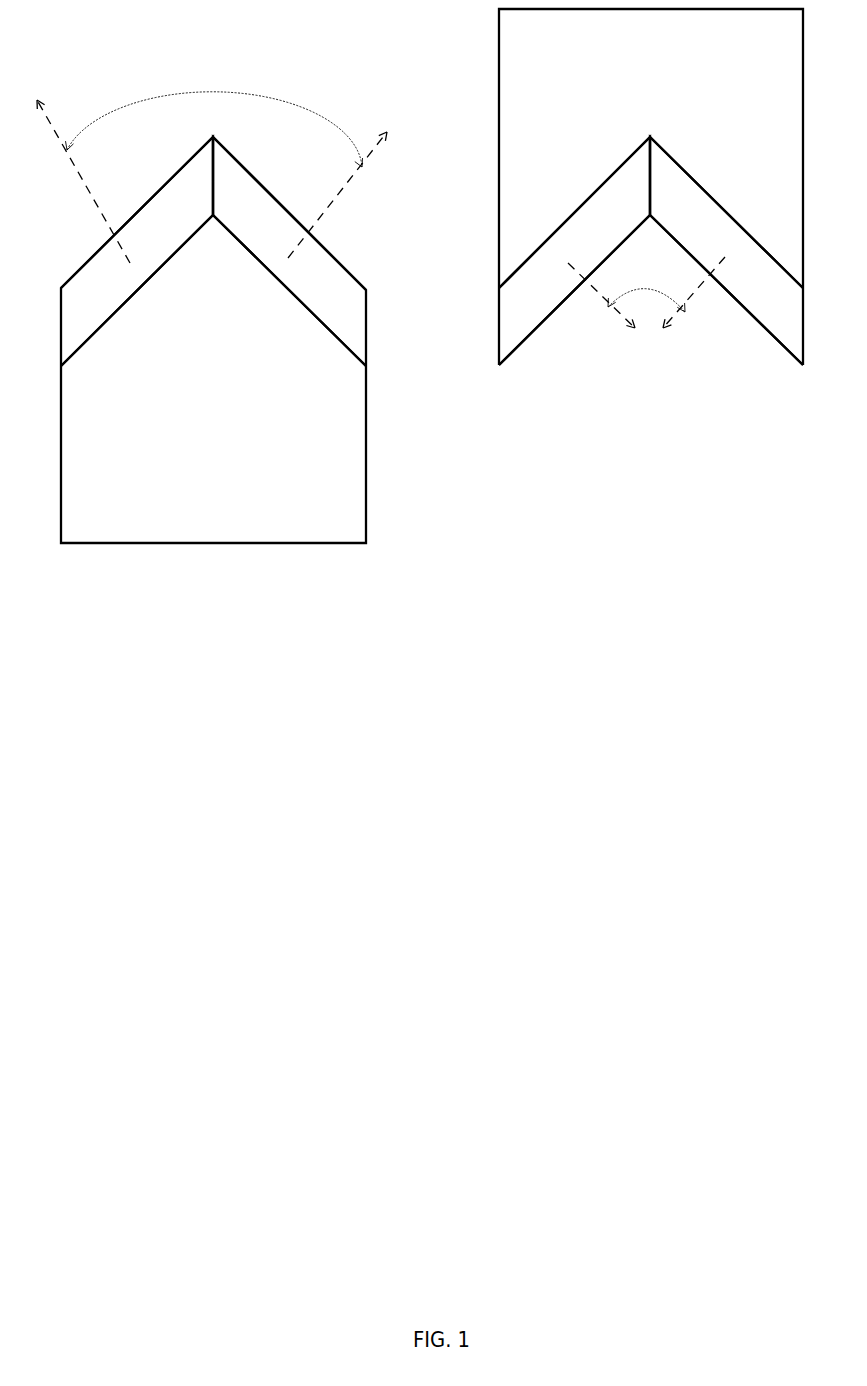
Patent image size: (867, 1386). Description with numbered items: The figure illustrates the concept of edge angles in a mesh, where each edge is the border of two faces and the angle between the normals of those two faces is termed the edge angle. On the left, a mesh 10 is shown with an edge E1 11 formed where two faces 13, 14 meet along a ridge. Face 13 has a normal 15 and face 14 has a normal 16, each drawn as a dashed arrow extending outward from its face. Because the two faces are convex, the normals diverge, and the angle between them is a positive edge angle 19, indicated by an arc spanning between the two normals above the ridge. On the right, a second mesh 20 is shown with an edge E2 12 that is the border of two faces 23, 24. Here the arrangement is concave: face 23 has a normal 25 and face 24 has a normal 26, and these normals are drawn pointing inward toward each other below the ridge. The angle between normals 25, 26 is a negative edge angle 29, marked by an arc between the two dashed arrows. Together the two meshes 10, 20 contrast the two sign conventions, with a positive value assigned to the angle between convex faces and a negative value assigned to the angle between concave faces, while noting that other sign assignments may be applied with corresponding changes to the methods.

The mesh 10 is at (230, 516).
The edge E1 11 is at (214, 182).
The edge E2 12 is at (648, 185).
The face 13 is at (348, 290).
The face 14 is at (111, 297).
The normal 15 is at (348, 181).
The normal 16 is at (76, 168).
The positive edge angle 19 is at (214, 129).
The mesh 20 is at (692, 90).
The face 23 is at (772, 298).
The face 24 is at (547, 298).
The normal 25 is at (691, 304).
The normal 26 is at (609, 307).
The negative edge angle 29 is at (650, 275).